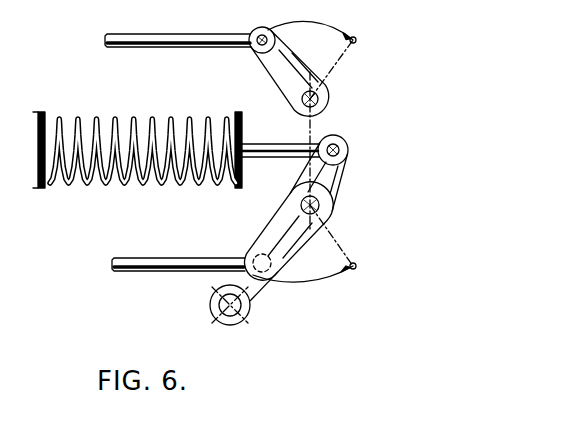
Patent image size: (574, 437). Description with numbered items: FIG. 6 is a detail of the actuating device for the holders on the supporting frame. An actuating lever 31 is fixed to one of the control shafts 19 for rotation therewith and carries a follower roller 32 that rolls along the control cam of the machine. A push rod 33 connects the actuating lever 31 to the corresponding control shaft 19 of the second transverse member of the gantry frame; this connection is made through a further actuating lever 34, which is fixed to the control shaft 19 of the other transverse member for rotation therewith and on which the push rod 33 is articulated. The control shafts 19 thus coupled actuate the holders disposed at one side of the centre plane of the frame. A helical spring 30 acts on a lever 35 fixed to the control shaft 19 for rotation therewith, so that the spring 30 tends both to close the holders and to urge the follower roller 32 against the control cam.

The control shaft 19 is at (319, 99).
The helical spring 30 is at (138, 183).
The actuating lever 31 is at (268, 232).
The follower roller 32 is at (252, 302).
The push rod 33 is at (175, 46).
The actuating lever 34 is at (268, 63).
The lever 35 is at (341, 172).